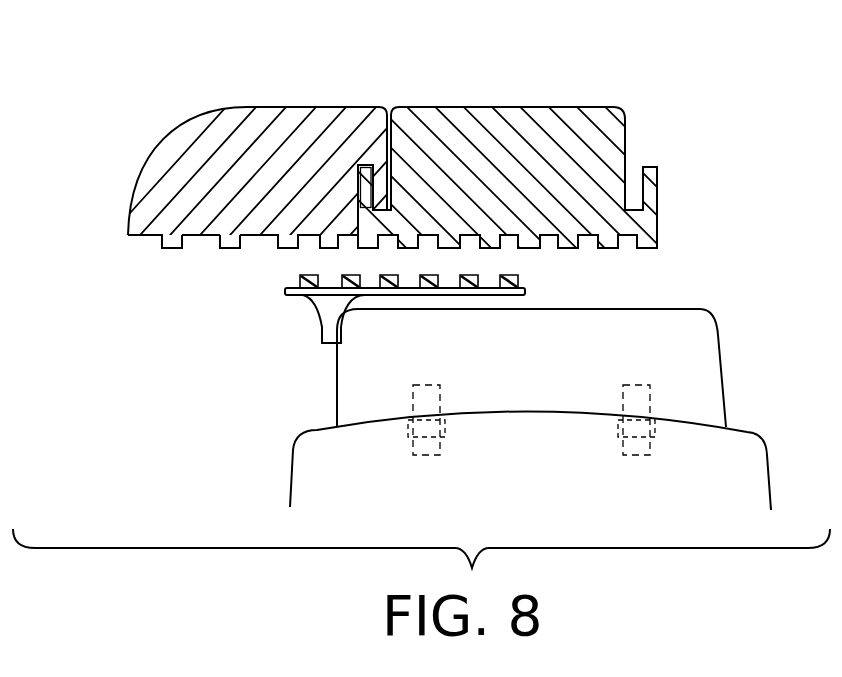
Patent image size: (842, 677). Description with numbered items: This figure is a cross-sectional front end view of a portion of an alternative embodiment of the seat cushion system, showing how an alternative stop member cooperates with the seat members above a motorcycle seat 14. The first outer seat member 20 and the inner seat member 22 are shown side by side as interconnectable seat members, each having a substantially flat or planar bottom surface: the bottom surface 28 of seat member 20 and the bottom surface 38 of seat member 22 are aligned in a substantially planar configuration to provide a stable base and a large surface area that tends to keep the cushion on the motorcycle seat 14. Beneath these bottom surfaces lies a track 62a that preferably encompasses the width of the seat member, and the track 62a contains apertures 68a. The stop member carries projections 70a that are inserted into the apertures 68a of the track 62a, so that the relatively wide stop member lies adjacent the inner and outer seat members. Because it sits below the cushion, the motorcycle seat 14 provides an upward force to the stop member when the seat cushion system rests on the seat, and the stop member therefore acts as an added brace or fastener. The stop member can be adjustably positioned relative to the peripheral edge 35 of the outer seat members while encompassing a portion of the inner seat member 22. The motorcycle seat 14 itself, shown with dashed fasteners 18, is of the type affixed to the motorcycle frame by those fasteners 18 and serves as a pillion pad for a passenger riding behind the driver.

The first outer seat member 20 is at (295, 105).
The inner seat member 22 is at (497, 106).
The peripheral edge 35 is at (128, 237).
The bottom surface 28 is at (148, 237).
The track 62a is at (207, 238).
The apertures 68a is at (232, 243).
The bottom surface 38 is at (587, 245).
The projections 70a is at (300, 281).
The motorcycle seat 14 is at (722, 350).
The fasteners 18 is at (413, 450).